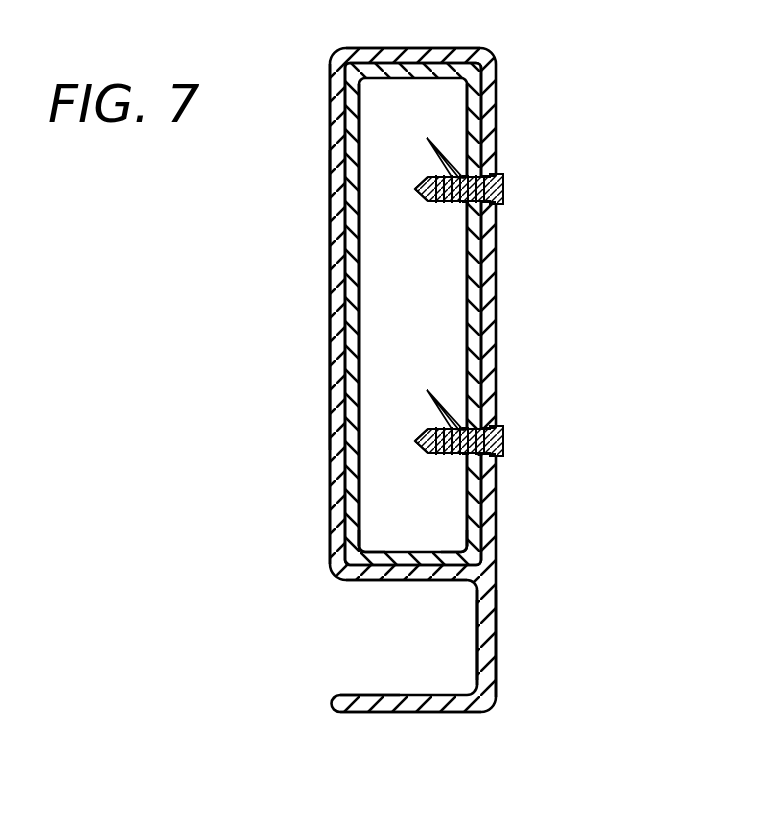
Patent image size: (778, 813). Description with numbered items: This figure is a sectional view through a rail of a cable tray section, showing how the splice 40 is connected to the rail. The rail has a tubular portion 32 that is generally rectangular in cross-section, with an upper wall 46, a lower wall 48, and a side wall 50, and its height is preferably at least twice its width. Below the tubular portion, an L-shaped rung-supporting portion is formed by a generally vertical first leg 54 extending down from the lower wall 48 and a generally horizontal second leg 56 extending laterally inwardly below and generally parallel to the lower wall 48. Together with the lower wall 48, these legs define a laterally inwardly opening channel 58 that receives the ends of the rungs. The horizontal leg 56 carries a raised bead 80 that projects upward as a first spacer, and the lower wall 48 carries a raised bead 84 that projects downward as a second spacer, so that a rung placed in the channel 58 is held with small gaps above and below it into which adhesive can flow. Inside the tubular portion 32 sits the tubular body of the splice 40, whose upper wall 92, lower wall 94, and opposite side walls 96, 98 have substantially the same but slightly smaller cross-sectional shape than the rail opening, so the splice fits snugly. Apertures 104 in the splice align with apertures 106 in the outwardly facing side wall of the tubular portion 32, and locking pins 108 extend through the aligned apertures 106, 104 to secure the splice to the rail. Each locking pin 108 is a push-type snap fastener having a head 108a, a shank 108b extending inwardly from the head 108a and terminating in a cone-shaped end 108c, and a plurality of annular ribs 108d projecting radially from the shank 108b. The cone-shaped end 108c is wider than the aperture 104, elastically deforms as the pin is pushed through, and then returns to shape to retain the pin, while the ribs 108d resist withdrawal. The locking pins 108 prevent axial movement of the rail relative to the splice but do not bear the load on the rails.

The tubular portion 32 is at (330, 402).
The splice 40 is at (478, 110).
The upper wall 46 is at (361, 48).
The lower wall 48 is at (362, 550).
The side wall 50 is at (330, 291).
The first leg 54 is at (497, 626).
The second leg 56 is at (443, 714).
The channel 58 is at (458, 642).
The raised bead 80 is at (379, 695).
The raised bead 84 is at (368, 581).
The upper wall 92 is at (378, 88).
The lower wall 94 is at (464, 552).
The side wall 96 is at (468, 305).
The side wall 98 is at (360, 351).
The aperture 104 is at (462, 456).
The aperture 106 is at (503, 455).
The locking pin 108 is at (503, 440).
The head 108a is at (500, 415).
The shank 108b is at (452, 456).
The cone-shaped end 108c is at (413, 442).
The annular ribs 108d is at (414, 277).